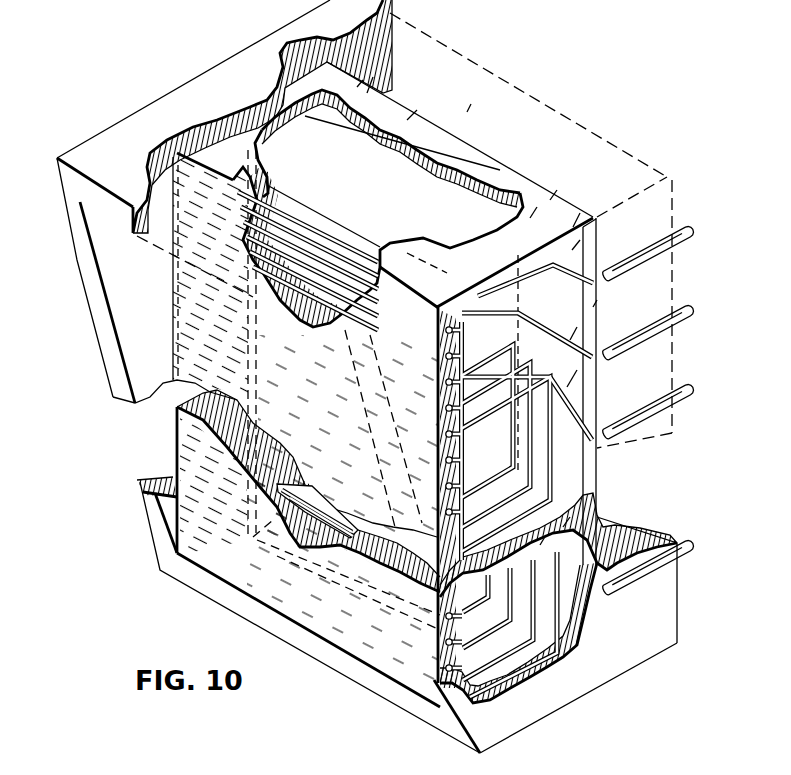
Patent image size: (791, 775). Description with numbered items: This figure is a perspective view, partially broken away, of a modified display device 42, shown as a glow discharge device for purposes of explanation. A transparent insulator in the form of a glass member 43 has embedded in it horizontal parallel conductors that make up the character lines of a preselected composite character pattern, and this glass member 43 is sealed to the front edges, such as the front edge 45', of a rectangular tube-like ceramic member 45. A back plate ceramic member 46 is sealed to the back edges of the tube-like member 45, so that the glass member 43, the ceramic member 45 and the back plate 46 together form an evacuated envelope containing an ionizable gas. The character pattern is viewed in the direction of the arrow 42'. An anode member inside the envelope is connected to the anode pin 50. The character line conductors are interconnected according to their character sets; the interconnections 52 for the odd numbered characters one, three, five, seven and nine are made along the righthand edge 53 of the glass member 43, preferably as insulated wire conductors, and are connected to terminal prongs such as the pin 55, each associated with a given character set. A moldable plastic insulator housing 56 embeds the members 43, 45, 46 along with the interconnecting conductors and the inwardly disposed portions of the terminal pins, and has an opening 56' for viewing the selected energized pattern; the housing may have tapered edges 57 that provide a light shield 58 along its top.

The display device 42 is at (351, 387).
The arrow 42' is at (373, 566).
The glass member 43 is at (292, 425).
The rectangular tube-like ceramic member 45 is at (391, 148).
The front edge 45' is at (317, 188).
The back plate ceramic member 46 is at (593, 247).
The anode pin 50 is at (688, 395).
The interconnections 52 is at (519, 481).
The righthand edge 53 is at (330, 285).
The terminal pin 55 is at (684, 232).
The plastic insulator housing 56 is at (578, 698).
The opening 56' is at (91, 302).
The tapered edges 57 is at (80, 258).
The light shield 58 is at (85, 192).